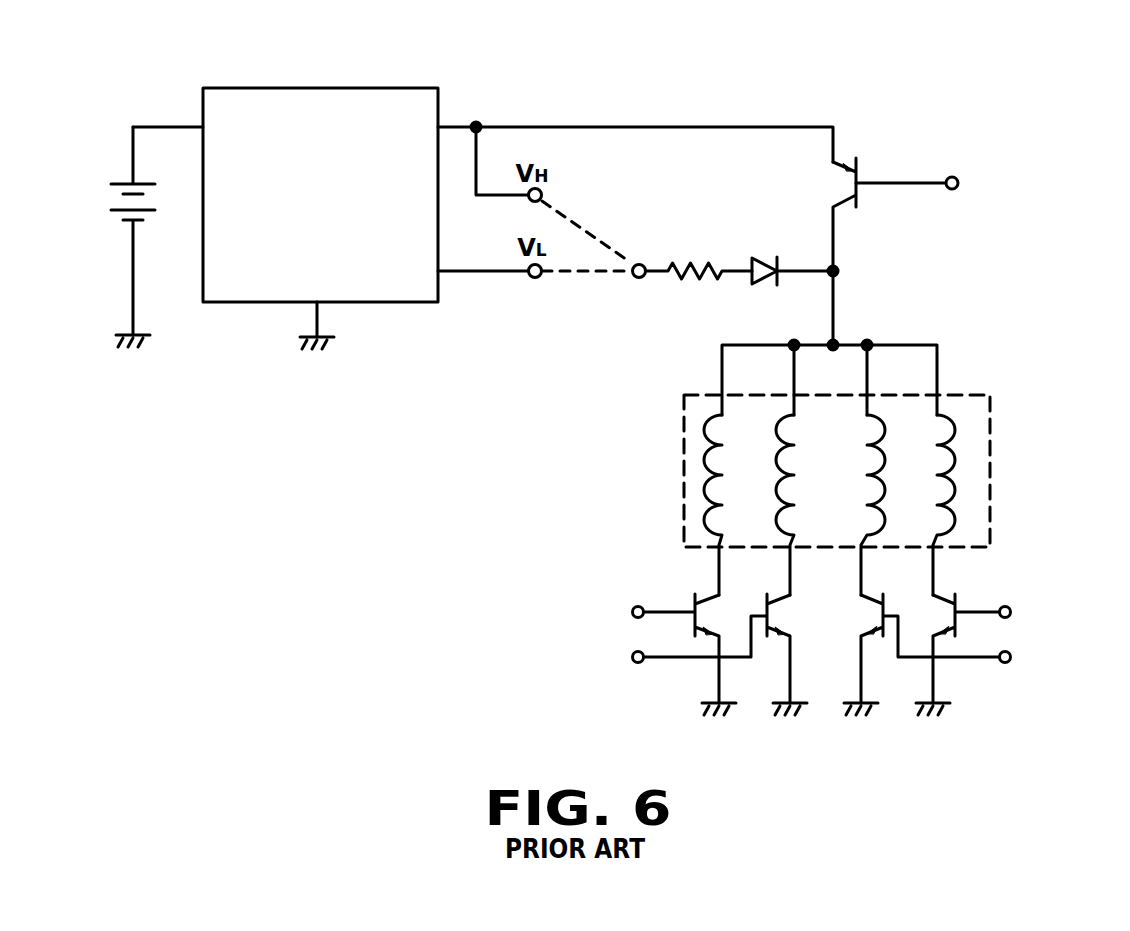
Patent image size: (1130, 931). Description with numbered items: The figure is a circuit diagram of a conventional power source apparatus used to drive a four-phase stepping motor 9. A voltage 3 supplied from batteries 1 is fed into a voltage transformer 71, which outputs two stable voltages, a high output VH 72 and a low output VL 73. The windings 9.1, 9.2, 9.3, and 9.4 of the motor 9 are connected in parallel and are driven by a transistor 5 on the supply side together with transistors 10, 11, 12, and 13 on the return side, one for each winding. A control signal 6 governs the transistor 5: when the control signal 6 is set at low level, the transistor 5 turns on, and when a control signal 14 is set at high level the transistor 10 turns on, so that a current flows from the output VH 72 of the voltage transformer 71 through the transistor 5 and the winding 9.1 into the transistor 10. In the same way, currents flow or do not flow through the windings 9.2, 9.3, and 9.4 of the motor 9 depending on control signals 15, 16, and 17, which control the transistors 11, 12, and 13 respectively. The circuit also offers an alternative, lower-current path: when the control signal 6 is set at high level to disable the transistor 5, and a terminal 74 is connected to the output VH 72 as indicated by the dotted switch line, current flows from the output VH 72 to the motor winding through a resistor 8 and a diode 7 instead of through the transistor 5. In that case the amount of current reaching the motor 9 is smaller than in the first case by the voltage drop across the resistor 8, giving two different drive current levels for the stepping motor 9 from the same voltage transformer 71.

The batteries 1 is at (108, 203).
The voltage 3 is at (203, 117).
The voltage transformer 71 is at (345, 88).
The output VH 72 is at (550, 188).
The output VL 73 is at (548, 257).
The terminal 74 is at (639, 279).
The resistor 8 is at (693, 262).
The diode 7 is at (763, 257).
The transistor 5 is at (847, 162).
The control signal 6 is at (897, 182).
The 4-phase stepping motor 9 is at (871, 495).
The winding 9.1 is at (715, 455).
The winding 9.2 is at (787, 457).
The winding 9.3 is at (877, 458).
The winding 9.4 is at (948, 477).
The transistor 10 is at (708, 595).
The transistor 11 is at (782, 593).
The transistor 12 is at (873, 608).
The transistor 13 is at (938, 605).
The control signal 14 is at (630, 612).
The control signal 15 is at (630, 657).
The control signal 16 is at (1012, 657).
The control signal 17 is at (1012, 612).